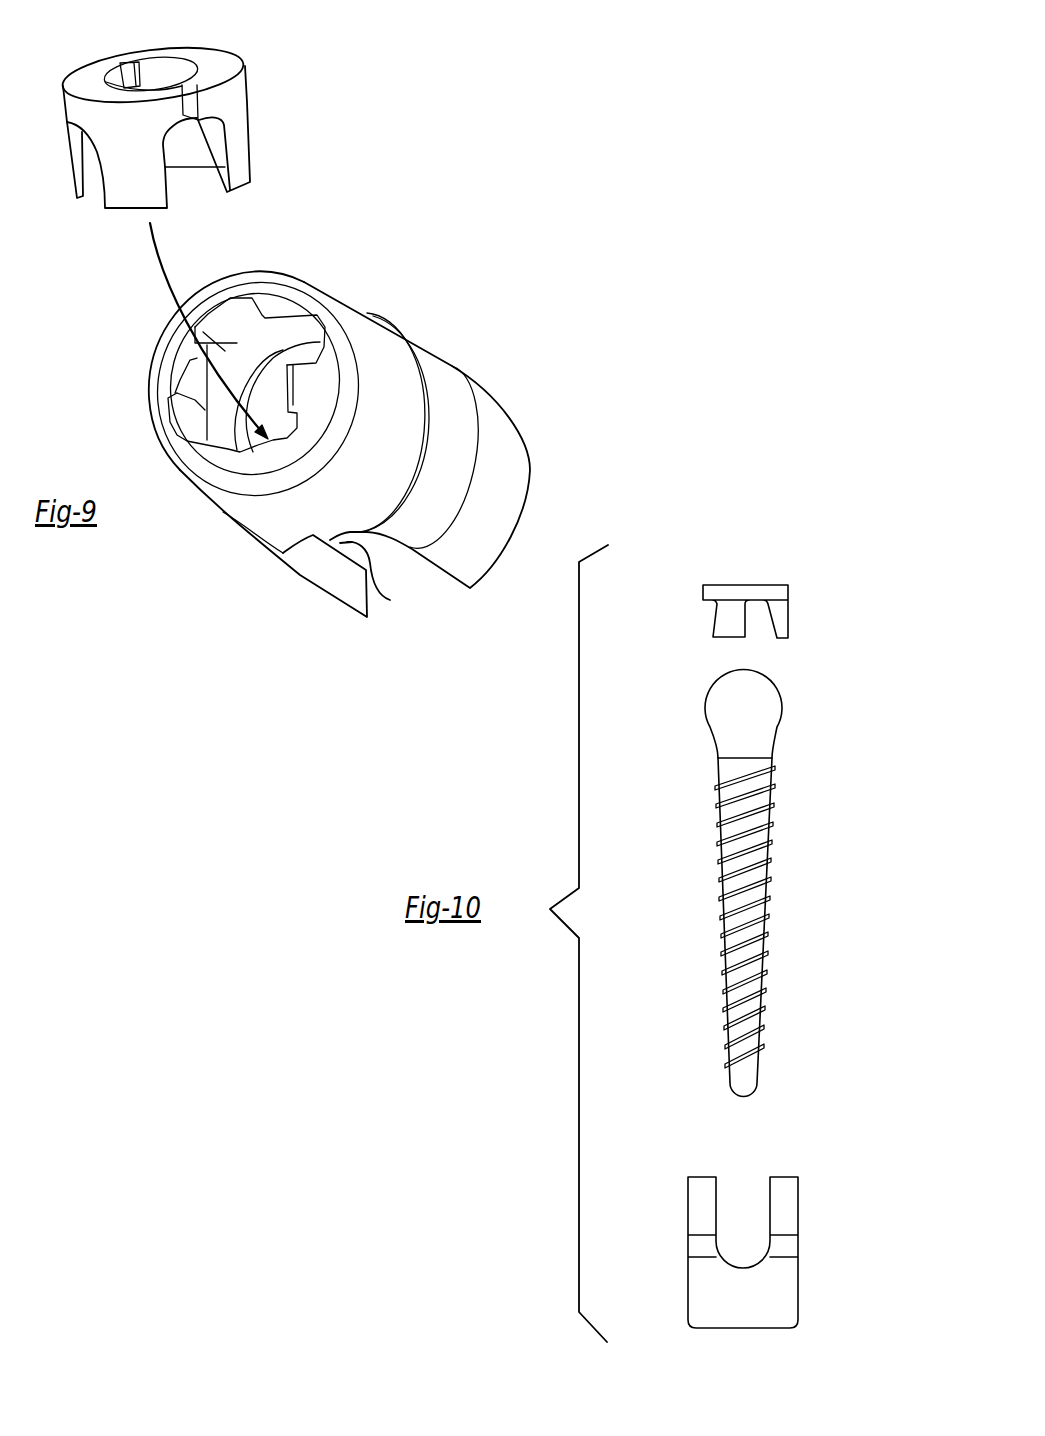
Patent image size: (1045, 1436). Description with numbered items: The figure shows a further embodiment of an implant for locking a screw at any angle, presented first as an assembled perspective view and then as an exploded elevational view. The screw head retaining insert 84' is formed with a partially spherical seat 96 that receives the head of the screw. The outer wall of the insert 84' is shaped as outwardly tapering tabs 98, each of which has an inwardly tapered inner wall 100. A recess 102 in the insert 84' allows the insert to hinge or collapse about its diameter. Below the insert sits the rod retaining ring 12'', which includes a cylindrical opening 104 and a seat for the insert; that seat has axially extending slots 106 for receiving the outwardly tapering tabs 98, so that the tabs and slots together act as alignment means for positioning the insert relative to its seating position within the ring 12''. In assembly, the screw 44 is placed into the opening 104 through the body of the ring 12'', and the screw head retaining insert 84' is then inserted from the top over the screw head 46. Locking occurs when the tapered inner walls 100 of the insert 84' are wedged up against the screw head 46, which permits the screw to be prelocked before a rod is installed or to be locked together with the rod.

In FIG. 9, the screw head retaining insert 84' is at (205, 139).
In FIG. 10, the screw head retaining insert 84' is at (788, 590).
In FIG. 9, the recess 102 is at (140, 73).
In FIG. 9, the partially spherical seat 96 is at (205, 155).
In FIG. 9, the outwardly tapering tabs 98 is at (247, 172).
In FIG. 9, the inwardly tapered inner wall 100 is at (177, 153).
In FIG. 9, the axially extending slots 106 is at (181, 412).
In FIG. 9, the rod retaining ring 12'' is at (314, 437).
In FIG. 10, the rod retaining ring 12'' is at (782, 1252).
In FIG. 9, the cylindrical opening 104 is at (390, 600).
In FIG. 10, the screw head 46 is at (760, 697).
In FIG. 10, the screw 44 is at (787, 865).